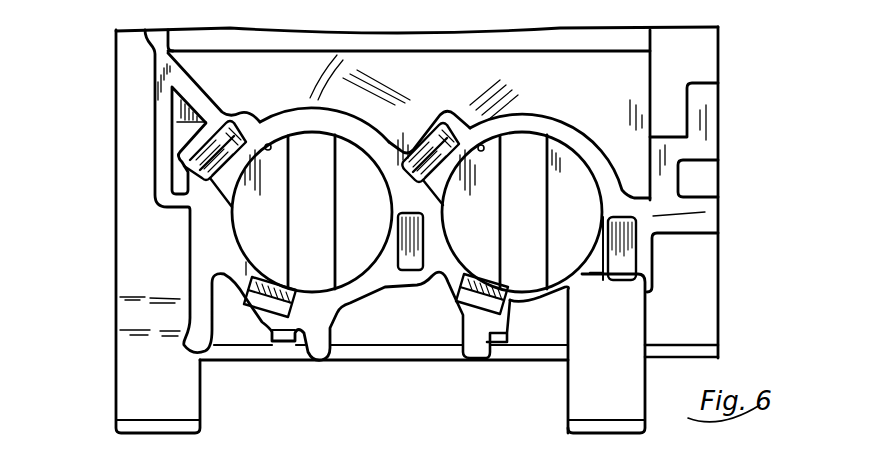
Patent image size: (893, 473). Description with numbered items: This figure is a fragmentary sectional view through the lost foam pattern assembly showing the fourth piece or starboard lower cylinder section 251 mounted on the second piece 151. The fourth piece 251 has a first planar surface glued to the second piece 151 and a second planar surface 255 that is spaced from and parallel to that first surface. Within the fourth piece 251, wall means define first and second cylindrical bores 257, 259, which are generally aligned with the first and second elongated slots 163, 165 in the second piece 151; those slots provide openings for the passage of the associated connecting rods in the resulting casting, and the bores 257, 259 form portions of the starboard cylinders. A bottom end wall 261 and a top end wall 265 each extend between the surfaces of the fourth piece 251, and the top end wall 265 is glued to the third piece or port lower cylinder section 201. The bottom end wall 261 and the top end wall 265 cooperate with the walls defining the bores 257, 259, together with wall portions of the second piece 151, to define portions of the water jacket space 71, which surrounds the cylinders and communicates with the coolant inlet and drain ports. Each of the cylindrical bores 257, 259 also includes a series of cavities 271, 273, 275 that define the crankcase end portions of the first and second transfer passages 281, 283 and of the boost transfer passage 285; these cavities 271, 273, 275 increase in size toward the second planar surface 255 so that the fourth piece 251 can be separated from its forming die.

The water jacket space 71 is at (616, 93).
The second piece 151 is at (678, 315).
The first elongated slot 163 is at (312, 150).
The second elongated slot 165 is at (522, 153).
The third piece or port lower cylinder section 201 is at (705, 212).
The fourth piece or starboard lower cylinder section 251 is at (686, 210).
The second planar surface 255 is at (700, 232).
The first cylindrical bore 257 is at (268, 144).
The second cylindrical bore 259 is at (480, 145).
The bottom end wall 261 is at (720, 95).
The top end wall 265 is at (152, 113).
The cavity 271 is at (590, 270).
The cavity 273 is at (398, 214).
The cavity 275 is at (452, 298).
The first transfer passage 281 is at (612, 238).
The second transfer passage 283 is at (427, 133).
The boost transfer passage 285 is at (493, 312).